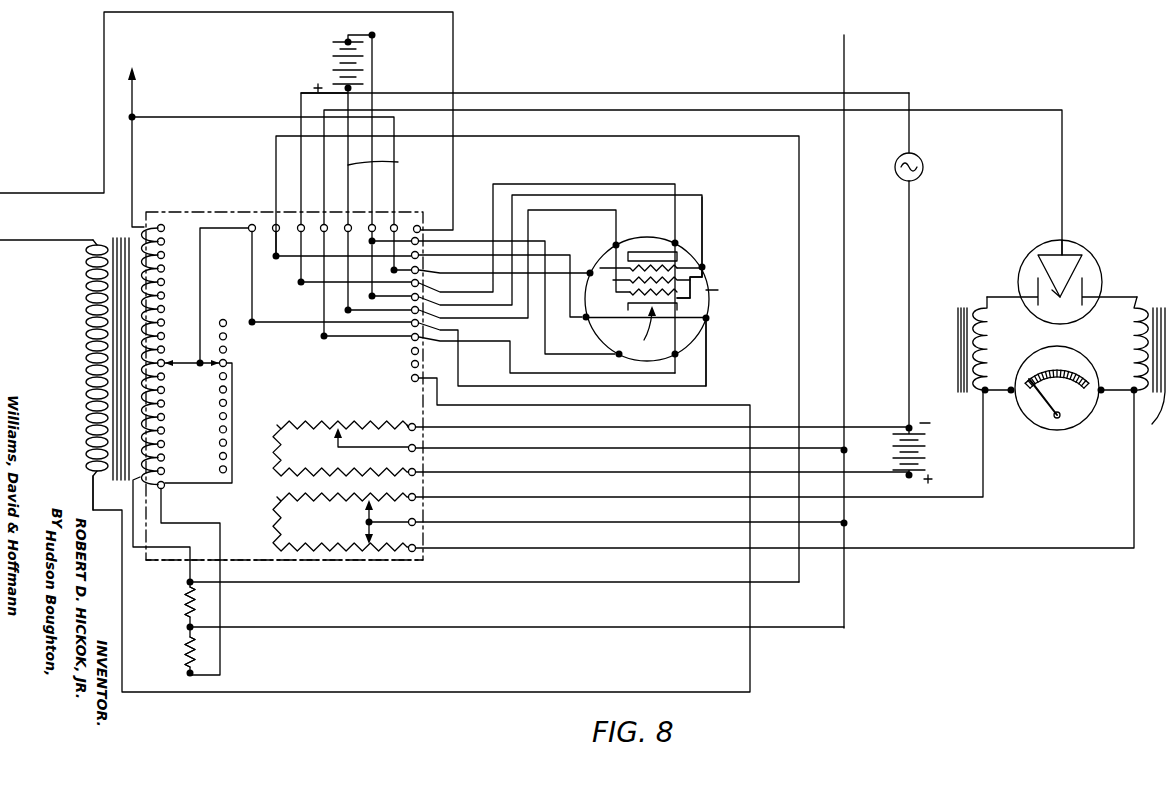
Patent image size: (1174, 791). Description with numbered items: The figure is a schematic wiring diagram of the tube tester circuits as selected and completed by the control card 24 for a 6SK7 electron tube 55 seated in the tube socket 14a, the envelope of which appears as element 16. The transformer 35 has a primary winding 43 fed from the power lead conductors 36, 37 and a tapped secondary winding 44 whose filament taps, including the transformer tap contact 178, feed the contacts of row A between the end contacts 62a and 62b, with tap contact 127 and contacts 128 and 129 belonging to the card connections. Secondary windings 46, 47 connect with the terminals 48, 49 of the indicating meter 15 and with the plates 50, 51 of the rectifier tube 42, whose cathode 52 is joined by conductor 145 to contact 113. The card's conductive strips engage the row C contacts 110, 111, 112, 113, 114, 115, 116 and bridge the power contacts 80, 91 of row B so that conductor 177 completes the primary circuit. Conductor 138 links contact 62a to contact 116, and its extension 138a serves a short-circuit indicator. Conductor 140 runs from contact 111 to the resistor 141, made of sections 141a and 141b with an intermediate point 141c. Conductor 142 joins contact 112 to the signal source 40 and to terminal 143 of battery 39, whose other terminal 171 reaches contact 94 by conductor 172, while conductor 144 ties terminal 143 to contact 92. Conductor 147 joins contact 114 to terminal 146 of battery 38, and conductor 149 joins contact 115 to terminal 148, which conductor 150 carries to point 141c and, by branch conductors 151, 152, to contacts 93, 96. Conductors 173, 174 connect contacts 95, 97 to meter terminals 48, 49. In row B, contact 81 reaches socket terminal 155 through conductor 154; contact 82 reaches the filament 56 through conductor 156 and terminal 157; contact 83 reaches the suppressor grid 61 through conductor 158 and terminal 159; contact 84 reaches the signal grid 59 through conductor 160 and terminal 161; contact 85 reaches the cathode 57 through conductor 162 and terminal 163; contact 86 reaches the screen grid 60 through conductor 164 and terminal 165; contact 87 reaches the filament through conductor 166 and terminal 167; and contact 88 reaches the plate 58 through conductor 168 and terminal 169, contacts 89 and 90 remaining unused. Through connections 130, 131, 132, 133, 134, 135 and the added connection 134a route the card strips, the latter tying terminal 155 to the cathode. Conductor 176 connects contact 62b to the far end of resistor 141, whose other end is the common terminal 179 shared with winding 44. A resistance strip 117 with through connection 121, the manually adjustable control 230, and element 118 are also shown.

The power lead conductor 36 is at (40, 193).
The power lead conductor 37 is at (31, 239).
The conductor extension 138a is at (140, 98).
The conductor 138 is at (186, 122).
The battery terminal 148 is at (345, 42).
The battery 38 is at (340, 70).
The conductor 149 is at (377, 78).
The battery terminal 146 is at (340, 92).
The conductor 147 is at (387, 156).
The conductor 142 is at (524, 94).
The conductor 145 is at (692, 110).
The conductor 140 is at (522, 134).
The stationary end switch contact 62a is at (161, 224).
The control card 24 is at (204, 214).
The stationary switch contact 110 is at (250, 224).
The stationary switch contact 111 is at (274, 224).
The stationary switch contact 112 is at (299, 224).
The stationary switch contact 113 is at (323, 224).
The stationary switch contact 114 is at (347, 224).
The stationary switch contact 115 is at (371, 224).
The stationary switch contact 116 is at (393, 224).
The power circuit switch contact 80 is at (417, 225).
The stationary switch contact 81 is at (430, 241).
The stationary switch contact 82 is at (430, 255).
The stationary switch contact 83 is at (430, 270).
The stationary switch contact 84 is at (432, 288).
The stationary switch contact 85 is at (432, 302).
The stationary switch contact 86 is at (432, 316).
The stationary switch contact 87 is at (422, 326).
The stationary switch contact 88 is at (421, 340).
The stationary switch contact 89 is at (411, 351).
The stationary switch contact 90 is at (411, 364).
The power circuit switch contact 91 is at (411, 379).
The additional through connection 134a is at (369, 242).
The through connection 130 is at (276, 259).
The through connection 131 is at (300, 285).
The through connection 132 is at (325, 339).
The through connection 133 is at (349, 313).
The through connection 134 is at (372, 299).
The through connection 135 is at (394, 274).
The through connection 129 is at (251, 319).
The through connection 127 is at (162, 359).
The through connection 128 is at (226, 363).
The transformer tap contact 178 is at (165, 375).
The tapped secondary winding 44 is at (160, 425).
The transformer 35 is at (112, 350).
The primary winding 43 is at (90, 380).
The stationary switch contact 62b is at (163, 489).
The resistance strip 117 is at (314, 422).
The through connection 121 is at (336, 441).
The manually adjustable control 230 is at (366, 524).
The potentiometer 118 is at (348, 551).
The stationary switch contact 92 is at (416, 427).
The stationary switch contact 93 is at (416, 448).
The stationary switch contact 94 is at (416, 472).
The stationary switch contact 95 is at (416, 497).
The stationary switch contact 96 is at (416, 522).
The stationary switch contact 97 is at (416, 548).
The conductor 160 is at (578, 184).
The conductor 162 is at (634, 196).
The conductor 164 is at (689, 197).
The conductor 154 is at (547, 243).
The conductor 156 is at (547, 250).
The conductor 158 is at (543, 280).
The socket terminal 159 is at (590, 269).
The socket terminal 161 is at (617, 241).
The plate 58 is at (637, 252).
The socket terminal 163 is at (678, 242).
The electron tube 16 is at (703, 269).
The suppressor grid 61 is at (703, 264).
The socket terminal 165 is at (705, 269).
The tube socket 14a is at (719, 290).
The signal grid 59 is at (705, 298).
The screen grid 60 is at (601, 272).
The cathode 57 is at (627, 307).
The filament or heater 56 is at (646, 330).
The socket terminal 157 is at (584, 320).
The socket terminal 155 is at (616, 356).
The 6SK7 electron tube 55 is at (709, 318).
The socket terminal 167 is at (708, 322).
The socket terminal 169 is at (680, 354).
The conductor 168 is at (512, 368).
The conductor 166 is at (603, 386).
The conductor 144 is at (632, 427).
The branch conductor 151 is at (604, 449).
The conductor 172 is at (604, 475).
The conductor 173 is at (604, 498).
The branch conductor 152 is at (604, 522).
The conductor 174 is at (610, 549).
The conductor 177 is at (573, 690).
The terminal 179 is at (186, 579).
The resistor 141 is at (186, 604).
The resistor section 141a is at (196, 603).
The conductor 176 is at (222, 615).
The intermediate point 141c is at (186, 628).
The resistor section 141b is at (196, 655).
The conductor 150 is at (846, 298).
The signal source 40 is at (924, 170).
The battery terminal 143 is at (906, 426).
The battery 39 is at (924, 452).
The battery terminal 171 is at (906, 478).
The rectifier tube 42 is at (1074, 258).
The rectifier plate 50 is at (1033, 289).
The rectifier plate 51 is at (1088, 289).
The cathode 52 is at (1060, 298).
The secondary winding 46 is at (987, 356).
The secondary winding 47 is at (1132, 352).
The meter terminal 48 is at (1010, 394).
The meter terminal 49 is at (1102, 394).
The direct current indicating meter 15 is at (1057, 432).